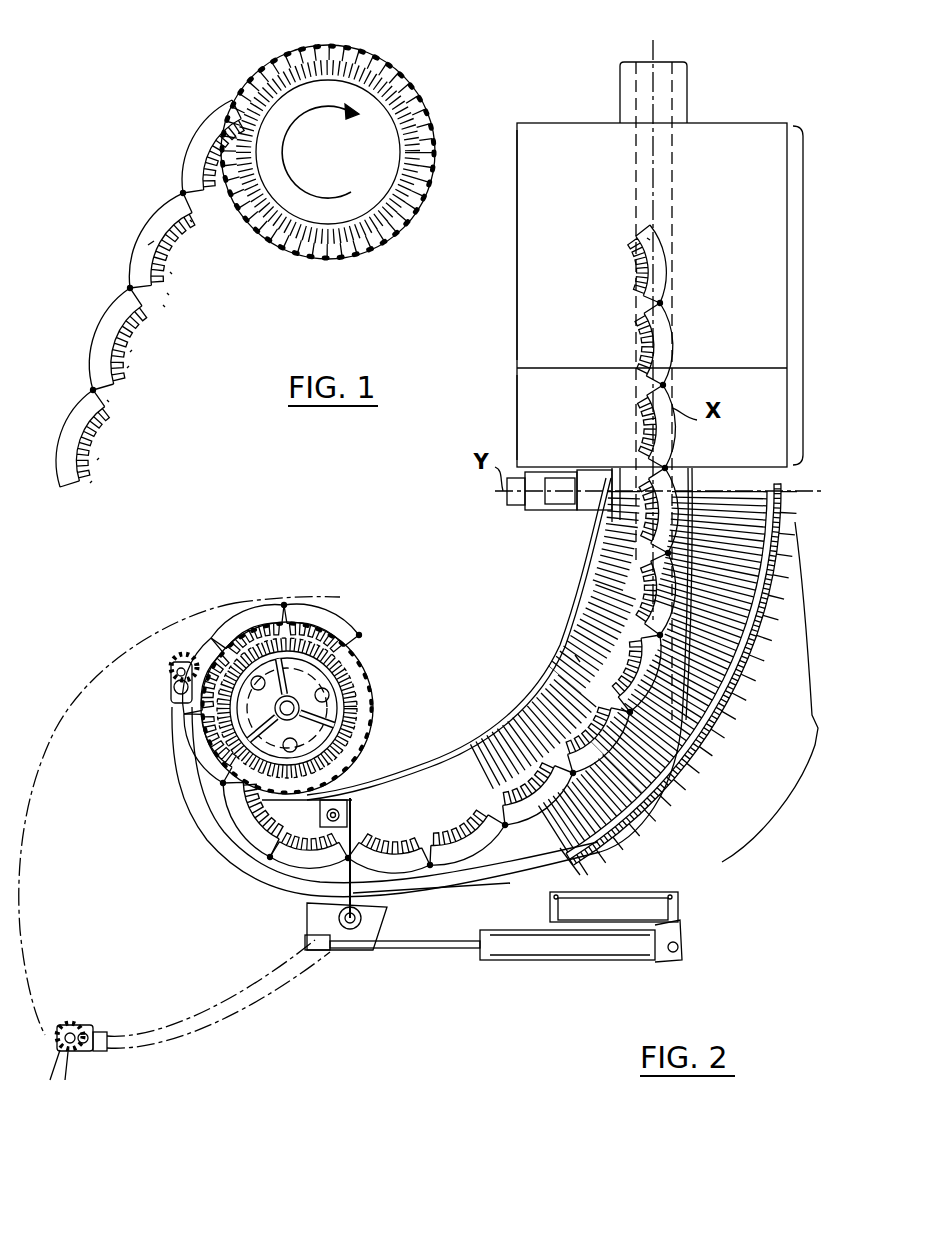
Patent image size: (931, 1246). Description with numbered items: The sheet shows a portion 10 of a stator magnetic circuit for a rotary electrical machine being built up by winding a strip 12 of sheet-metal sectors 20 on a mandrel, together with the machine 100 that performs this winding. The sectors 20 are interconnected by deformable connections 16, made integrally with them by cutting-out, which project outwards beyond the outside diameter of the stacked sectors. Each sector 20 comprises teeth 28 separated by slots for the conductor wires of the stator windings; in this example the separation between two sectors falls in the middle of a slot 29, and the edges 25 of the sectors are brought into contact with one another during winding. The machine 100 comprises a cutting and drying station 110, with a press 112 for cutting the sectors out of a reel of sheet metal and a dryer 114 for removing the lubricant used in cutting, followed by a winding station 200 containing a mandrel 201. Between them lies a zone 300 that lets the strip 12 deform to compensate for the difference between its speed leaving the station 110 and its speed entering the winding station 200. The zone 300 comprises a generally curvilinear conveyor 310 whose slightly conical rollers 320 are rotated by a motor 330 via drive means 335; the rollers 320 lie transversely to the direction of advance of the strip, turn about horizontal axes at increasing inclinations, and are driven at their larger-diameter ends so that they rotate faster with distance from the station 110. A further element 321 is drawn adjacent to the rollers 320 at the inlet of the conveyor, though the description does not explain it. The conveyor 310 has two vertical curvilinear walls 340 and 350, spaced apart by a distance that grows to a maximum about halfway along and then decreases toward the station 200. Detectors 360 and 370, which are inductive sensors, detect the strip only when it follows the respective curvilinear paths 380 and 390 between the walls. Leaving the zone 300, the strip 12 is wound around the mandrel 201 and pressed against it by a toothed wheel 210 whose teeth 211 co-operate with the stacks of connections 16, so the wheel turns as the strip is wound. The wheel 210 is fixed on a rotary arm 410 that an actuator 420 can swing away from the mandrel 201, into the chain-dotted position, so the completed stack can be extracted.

In FIG. 1, the portion of stator magnetic circuit 10 is at (409, 68).
In FIG. 1, the strip 12 is at (92, 347).
In FIG. 2, the strip 12 is at (433, 836).
In FIG. 1, the deformable connections 16 is at (183, 192).
In FIG. 2, the deformable connections 16 is at (664, 303).
In FIG. 1, the sectors 20 is at (150, 243).
In FIG. 2, the sectors 20 is at (662, 250).
In FIG. 1, the edges 25 is at (167, 293).
In FIG. 1, the teeth 28 is at (170, 272).
In FIG. 1, the slot 29 is at (190, 220).
In FIG. 2, the machine 100 is at (692, 866).
In FIG. 2, the cutting and drying station 110 is at (642, 264).
In FIG. 2, the press 112 is at (542, 303).
In FIG. 2, the dryer 114 is at (542, 410).
In FIG. 2, the winding station 200 is at (350, 834).
In FIG. 2, the mandrel 201 is at (318, 692).
In FIG. 2, the toothed wheel 210 is at (165, 688).
In FIG. 2, the teeth 211 is at (187, 651).
In FIG. 2, the zone 300 is at (575, 674).
In FIG. 2, the conveyor 310 is at (677, 790).
In FIG. 2, the rollers 320 is at (621, 557).
In FIG. 2, the plate end 321 is at (633, 508).
In FIG. 2, the motor 330 is at (542, 497).
In FIG. 2, the drive means 335 is at (703, 742).
In FIG. 2, the wall 340 is at (475, 748).
In FIG. 2, the wall 350 is at (597, 850).
In FIG. 2, the detector 360 is at (682, 772).
In FIG. 2, the detector 370 is at (535, 712).
In FIG. 2, the curvilinear path 380 is at (690, 648).
In FIG. 2, the curvilinear path 390 is at (578, 660).
In FIG. 2, the rotary arm 410 is at (195, 795).
In FIG. 2, the actuator 420 is at (522, 962).